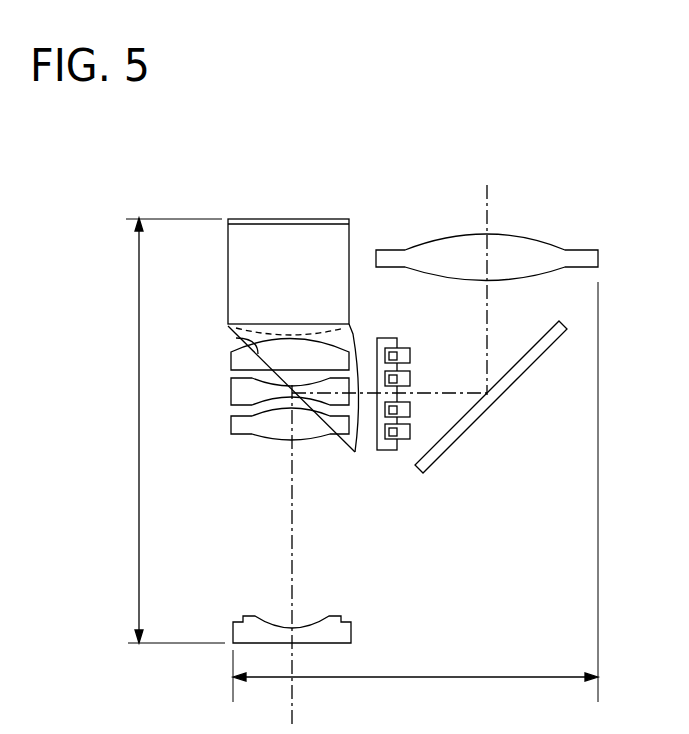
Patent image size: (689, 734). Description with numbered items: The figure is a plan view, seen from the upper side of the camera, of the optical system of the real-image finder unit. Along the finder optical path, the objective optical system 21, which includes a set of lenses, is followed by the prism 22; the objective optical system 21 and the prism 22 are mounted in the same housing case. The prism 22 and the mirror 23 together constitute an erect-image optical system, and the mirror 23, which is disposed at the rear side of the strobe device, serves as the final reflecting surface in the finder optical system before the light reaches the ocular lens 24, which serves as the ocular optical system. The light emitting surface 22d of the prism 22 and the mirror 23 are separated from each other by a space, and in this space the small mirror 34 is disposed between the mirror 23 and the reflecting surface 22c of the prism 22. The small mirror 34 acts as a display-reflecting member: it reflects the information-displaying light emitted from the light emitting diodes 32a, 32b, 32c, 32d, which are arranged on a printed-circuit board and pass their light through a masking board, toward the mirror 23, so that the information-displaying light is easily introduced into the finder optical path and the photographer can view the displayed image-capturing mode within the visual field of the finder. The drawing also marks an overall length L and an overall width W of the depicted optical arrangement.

The objective optical system 21 is at (215, 352).
The prism 22 is at (299, 237).
The reflecting surface 22c is at (240, 343).
The light emitting surface 22d is at (359, 446).
The mirror 23 is at (541, 352).
The ocular lens 24 is at (528, 238).
The light emitting diode 32a is at (404, 440).
The light emitting diode 32b is at (411, 409).
The light emitting diode 32c is at (407, 371).
The light emitting diode 32d is at (403, 347).
The small mirror 34 is at (380, 451).
The length dimension L is at (168, 430).
The width dimension W is at (415, 492).